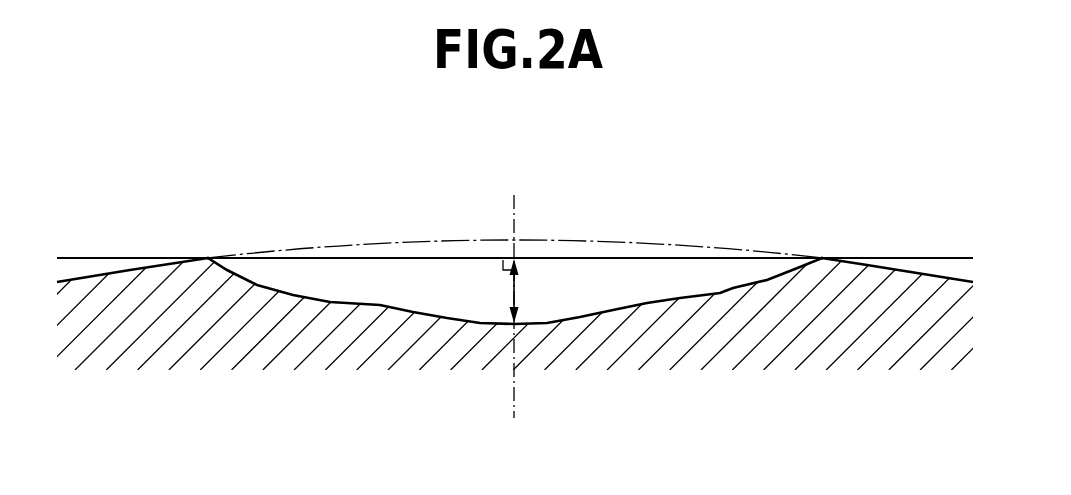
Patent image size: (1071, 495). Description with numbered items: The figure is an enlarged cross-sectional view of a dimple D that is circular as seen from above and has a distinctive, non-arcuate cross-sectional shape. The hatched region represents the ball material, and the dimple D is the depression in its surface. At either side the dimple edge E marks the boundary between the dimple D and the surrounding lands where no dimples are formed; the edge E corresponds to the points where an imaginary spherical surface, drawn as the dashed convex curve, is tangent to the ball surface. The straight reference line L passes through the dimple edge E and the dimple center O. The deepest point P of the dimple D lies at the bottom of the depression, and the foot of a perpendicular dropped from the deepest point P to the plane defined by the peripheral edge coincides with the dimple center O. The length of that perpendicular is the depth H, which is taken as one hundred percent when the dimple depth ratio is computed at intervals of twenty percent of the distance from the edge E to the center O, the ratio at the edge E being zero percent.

The dimple D is at (612, 285).
The reference line L is at (927, 257).
The center of the dimple O is at (514, 258).
The edge of the dimple E is at (208, 258).
The depth H is at (512, 295).
The deepest point of the dimple P is at (514, 323).